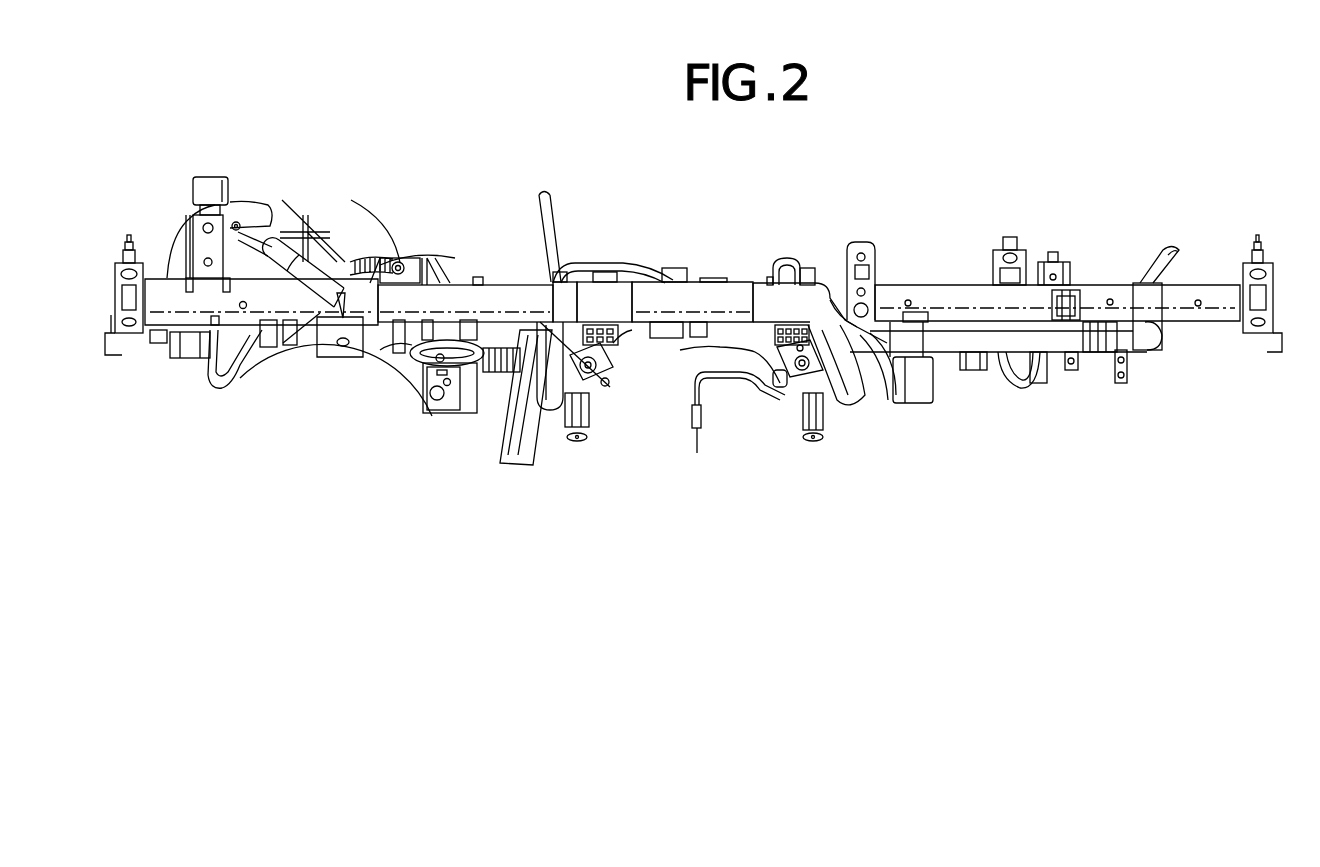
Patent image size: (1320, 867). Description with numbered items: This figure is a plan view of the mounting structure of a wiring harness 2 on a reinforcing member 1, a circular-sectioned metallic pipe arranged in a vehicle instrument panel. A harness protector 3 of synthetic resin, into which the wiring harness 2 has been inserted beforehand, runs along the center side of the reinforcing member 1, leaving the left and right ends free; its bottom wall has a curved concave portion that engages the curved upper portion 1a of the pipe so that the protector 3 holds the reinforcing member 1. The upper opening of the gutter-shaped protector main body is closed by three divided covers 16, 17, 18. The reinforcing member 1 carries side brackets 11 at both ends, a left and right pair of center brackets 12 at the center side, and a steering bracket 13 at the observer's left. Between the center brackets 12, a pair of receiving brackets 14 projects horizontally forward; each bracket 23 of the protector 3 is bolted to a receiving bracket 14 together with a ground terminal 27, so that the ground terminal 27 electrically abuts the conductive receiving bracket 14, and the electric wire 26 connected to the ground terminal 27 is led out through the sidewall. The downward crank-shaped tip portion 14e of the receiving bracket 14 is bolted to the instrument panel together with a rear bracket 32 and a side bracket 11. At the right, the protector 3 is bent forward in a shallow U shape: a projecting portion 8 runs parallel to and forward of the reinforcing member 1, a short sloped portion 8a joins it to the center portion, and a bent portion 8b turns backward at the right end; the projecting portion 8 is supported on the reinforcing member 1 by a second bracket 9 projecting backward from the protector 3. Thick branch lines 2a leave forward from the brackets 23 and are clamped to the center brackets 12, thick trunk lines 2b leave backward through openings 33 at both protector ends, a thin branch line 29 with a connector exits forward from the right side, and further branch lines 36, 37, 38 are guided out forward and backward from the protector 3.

The reinforcing member 1 is at (185, 310).
The curved upper portion 1a is at (955, 302).
The wiring harness 2 is at (333, 318).
The branch lines 2a is at (547, 380).
The trunk lines 2b is at (287, 245).
The harness protector 3 is at (698, 283).
The projecting portion 8 is at (1012, 344).
The sloped portion 8a is at (843, 327).
The bent portion 8b is at (1157, 324).
The second bracket 9 is at (1085, 307).
The side brackets 11 is at (128, 300).
The center brackets 12 is at (533, 447).
The steering bracket 13 is at (437, 397).
The receiving brackets 14 is at (590, 395).
The tip portion 14e is at (813, 443).
The cover 16 is at (493, 302).
The cover 17 is at (677, 297).
The cover 18 is at (817, 302).
The bracket 23 is at (615, 355).
The electric wire 26 is at (745, 377).
The ground terminal 27 is at (598, 393).
The branch line 29 is at (1038, 385).
The rear bracket 32 is at (872, 250).
The openings 33 is at (356, 268).
The branch line 36 is at (473, 395).
The branch line 37 is at (553, 240).
The branch line 38 is at (907, 410).